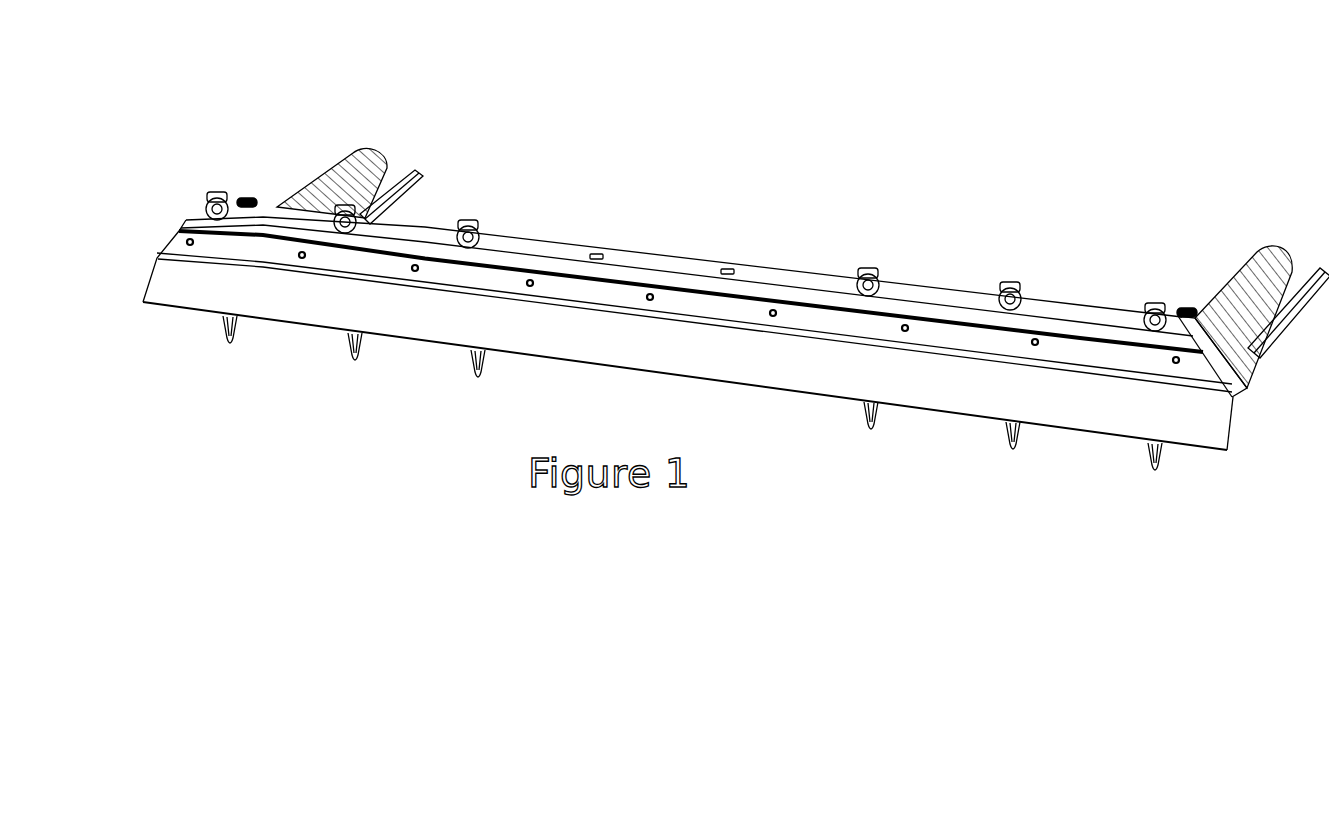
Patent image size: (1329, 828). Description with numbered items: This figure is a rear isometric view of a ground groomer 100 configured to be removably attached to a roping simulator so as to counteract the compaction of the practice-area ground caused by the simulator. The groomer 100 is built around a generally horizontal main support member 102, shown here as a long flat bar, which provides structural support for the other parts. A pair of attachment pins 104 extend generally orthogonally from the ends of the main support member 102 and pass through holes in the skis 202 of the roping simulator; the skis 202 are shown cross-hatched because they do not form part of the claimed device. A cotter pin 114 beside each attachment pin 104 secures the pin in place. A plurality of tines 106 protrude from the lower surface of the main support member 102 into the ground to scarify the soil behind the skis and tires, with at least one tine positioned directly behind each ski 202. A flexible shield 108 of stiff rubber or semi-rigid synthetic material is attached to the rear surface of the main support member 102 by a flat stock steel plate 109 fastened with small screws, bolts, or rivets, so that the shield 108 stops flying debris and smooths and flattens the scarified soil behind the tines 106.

The ground groomer 100 is at (702, 282).
The main support member 102 is at (702, 282).
The attachment pins 104 is at (631, 215).
The tines 106 is at (670, 425).
The flexible shield 108 is at (654, 335).
The flat stock steel plate 109 is at (691, 322).
The cotter pin 114 is at (725, 214).
The skis 202 is at (789, 220).